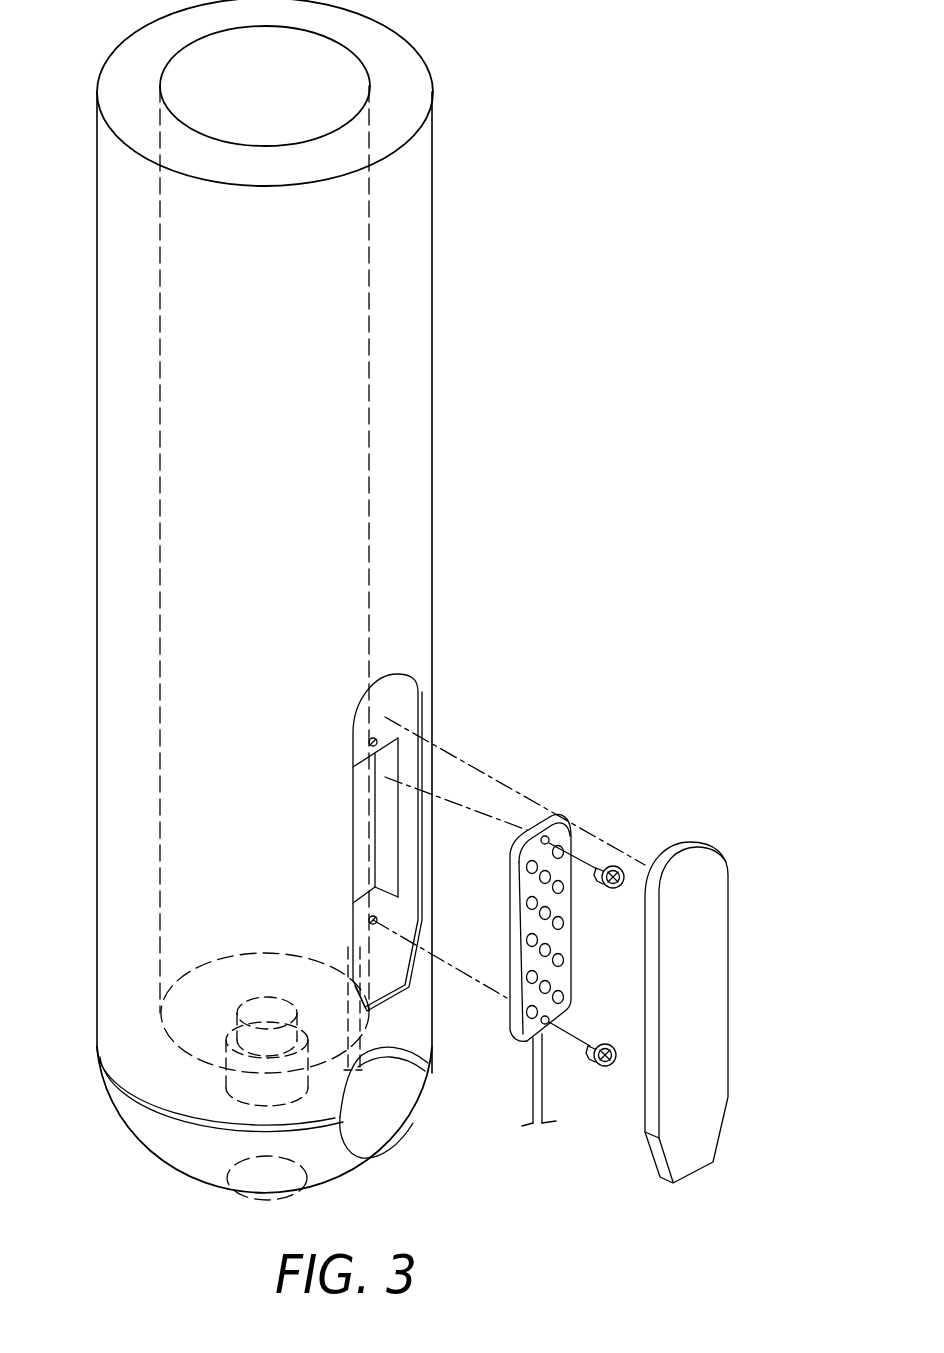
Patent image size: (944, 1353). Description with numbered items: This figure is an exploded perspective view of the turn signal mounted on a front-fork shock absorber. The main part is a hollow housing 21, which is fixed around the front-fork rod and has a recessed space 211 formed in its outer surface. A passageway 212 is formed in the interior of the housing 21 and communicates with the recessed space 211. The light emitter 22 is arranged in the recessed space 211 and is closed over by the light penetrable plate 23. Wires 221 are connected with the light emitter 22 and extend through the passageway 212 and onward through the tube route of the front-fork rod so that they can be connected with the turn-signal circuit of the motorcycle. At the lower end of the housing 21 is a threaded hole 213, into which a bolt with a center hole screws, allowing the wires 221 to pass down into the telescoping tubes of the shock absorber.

The hollow housing 21 is at (417, 403).
The recessed space 211 is at (385, 777).
The passageway 212 is at (322, 1083).
The threaded hole 213 is at (232, 1063).
The light emitter 22 is at (558, 830).
The wires 221 is at (537, 1077).
The light penetrable plate 23 is at (707, 933).